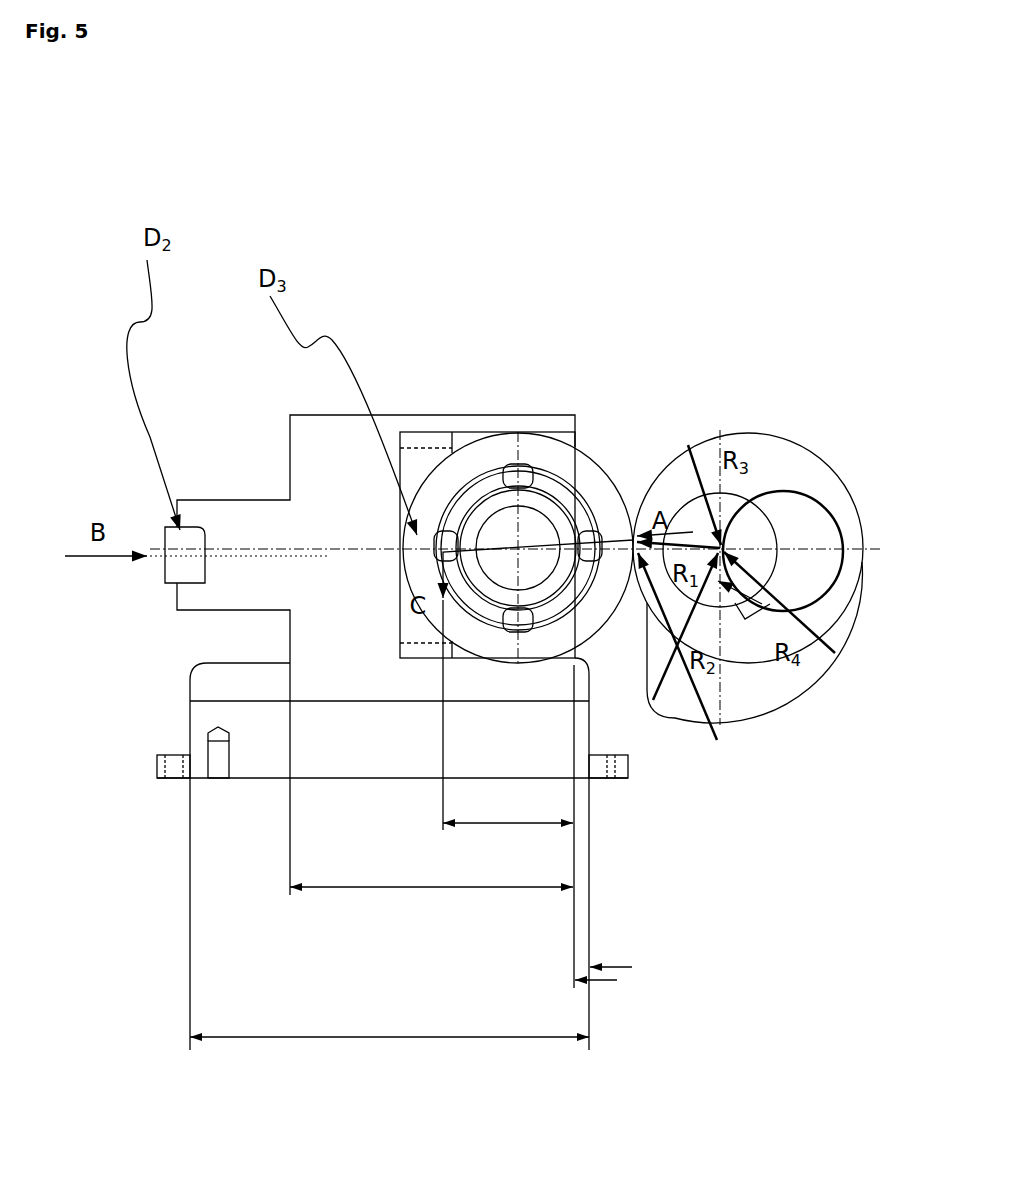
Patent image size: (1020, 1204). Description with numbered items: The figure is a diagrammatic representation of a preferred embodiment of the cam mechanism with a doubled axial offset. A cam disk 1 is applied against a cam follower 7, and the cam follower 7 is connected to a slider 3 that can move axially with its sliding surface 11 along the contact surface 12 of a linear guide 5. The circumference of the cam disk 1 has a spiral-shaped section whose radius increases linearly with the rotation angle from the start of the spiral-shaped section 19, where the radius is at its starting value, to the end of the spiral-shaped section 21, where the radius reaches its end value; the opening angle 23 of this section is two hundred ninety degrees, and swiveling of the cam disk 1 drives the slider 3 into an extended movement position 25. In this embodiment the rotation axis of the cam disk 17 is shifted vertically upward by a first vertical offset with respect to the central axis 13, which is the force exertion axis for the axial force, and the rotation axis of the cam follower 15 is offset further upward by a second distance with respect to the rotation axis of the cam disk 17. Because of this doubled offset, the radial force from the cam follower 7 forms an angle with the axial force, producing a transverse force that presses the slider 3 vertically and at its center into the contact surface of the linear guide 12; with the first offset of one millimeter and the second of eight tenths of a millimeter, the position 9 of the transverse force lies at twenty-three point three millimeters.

The cam disk 1 is at (806, 424).
The slider 3 is at (236, 468).
The linear guide 5 is at (261, 766).
The cam follower 7 is at (592, 446).
The distance of the transverse force 9 is at (508, 794).
The sliding surface 11 is at (431, 779).
The contact surface of the linear guide 12 is at (389, 914).
The central axis 13 is at (252, 564).
The rotation axis of the cam follower 15 is at (517, 540).
The rotation axis of the cam disk 17 is at (724, 551).
The start of the spiral-shaped section 19 is at (732, 742).
The end of the spiral-shaped section 21 is at (655, 724).
The opening angle of the spiral-shaped section 23 is at (783, 551).
The movement position of the slider 25 is at (625, 978).